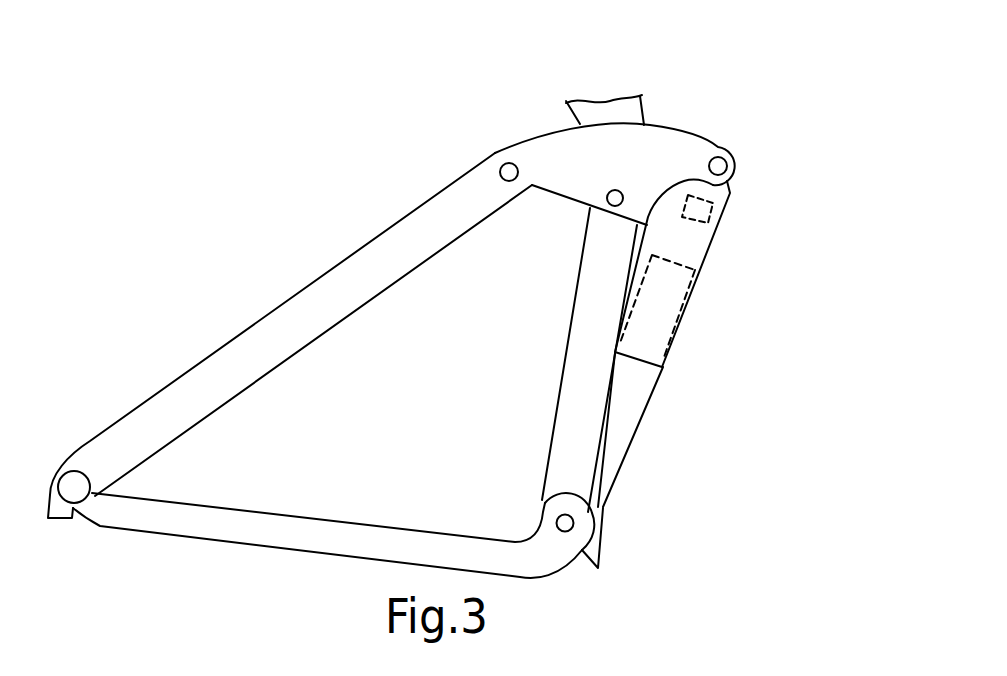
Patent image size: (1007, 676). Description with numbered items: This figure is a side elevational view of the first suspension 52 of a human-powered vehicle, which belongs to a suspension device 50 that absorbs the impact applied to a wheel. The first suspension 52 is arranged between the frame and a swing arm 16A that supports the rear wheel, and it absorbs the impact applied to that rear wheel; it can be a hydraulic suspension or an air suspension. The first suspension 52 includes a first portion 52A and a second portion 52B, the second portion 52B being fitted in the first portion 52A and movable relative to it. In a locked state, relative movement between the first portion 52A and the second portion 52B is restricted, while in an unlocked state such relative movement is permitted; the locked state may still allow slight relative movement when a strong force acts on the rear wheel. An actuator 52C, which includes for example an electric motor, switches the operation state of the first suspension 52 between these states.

The suspension device 50 is at (817, 61).
The first suspension 52 is at (742, 101).
The first portion 52A is at (697, 248).
The second portion 52B is at (627, 397).
The actuator 52C is at (710, 218).
The swing arm 16A is at (358, 275).